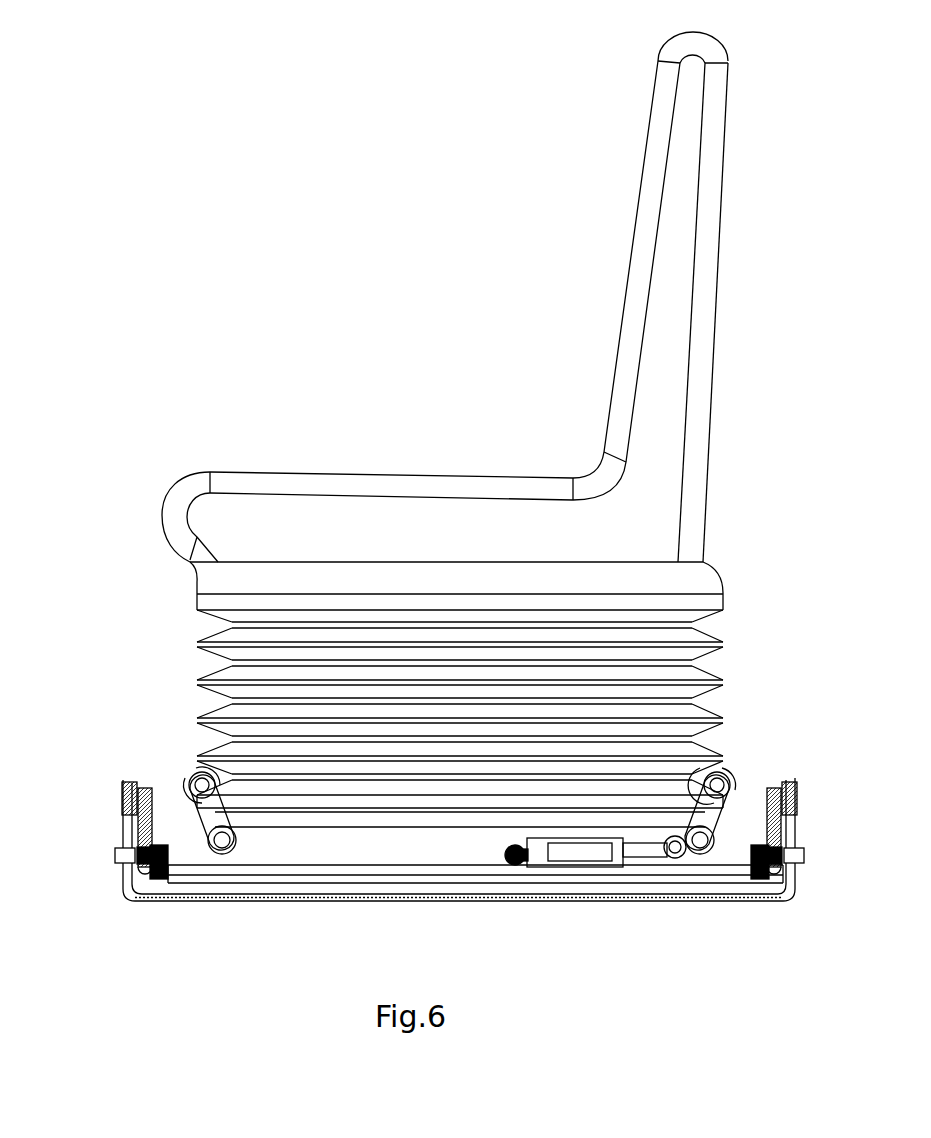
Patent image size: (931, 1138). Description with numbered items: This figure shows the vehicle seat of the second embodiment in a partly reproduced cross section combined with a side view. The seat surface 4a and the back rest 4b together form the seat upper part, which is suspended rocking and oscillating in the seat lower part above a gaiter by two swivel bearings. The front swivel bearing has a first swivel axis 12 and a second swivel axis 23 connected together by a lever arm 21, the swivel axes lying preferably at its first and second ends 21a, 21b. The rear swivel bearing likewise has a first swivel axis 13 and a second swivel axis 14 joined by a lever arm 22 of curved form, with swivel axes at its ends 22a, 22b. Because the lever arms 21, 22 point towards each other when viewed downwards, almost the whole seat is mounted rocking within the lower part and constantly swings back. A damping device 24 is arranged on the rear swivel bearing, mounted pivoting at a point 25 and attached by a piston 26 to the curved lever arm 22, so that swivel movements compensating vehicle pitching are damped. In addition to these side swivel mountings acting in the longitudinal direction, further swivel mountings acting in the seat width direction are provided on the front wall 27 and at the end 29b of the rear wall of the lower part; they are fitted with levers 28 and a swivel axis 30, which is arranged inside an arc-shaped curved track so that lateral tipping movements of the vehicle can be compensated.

The seat surface 4a is at (385, 520).
The back rest 4b is at (668, 318).
The first swivel axis 12 is at (198, 762).
The first swivel axis 13 is at (728, 780).
The swivel axis 14 is at (686, 875).
The lever arm 21 is at (203, 806).
The first end of lever arm 21a is at (188, 774).
The second end of lever arm 21b is at (236, 852).
The lever arm 22 is at (757, 804).
The first end of lever arm 22a is at (724, 777).
The second end of lever arm 22b is at (716, 868).
The swivel axis 23 is at (202, 893).
The damping device 24 is at (580, 870).
The pivot point 25 is at (517, 872).
The piston 26 is at (650, 870).
The front wall 27 is at (132, 845).
The lever 28 is at (128, 815).
The end of rear wall 29b is at (798, 830).
The swivel axis 30 is at (118, 855).